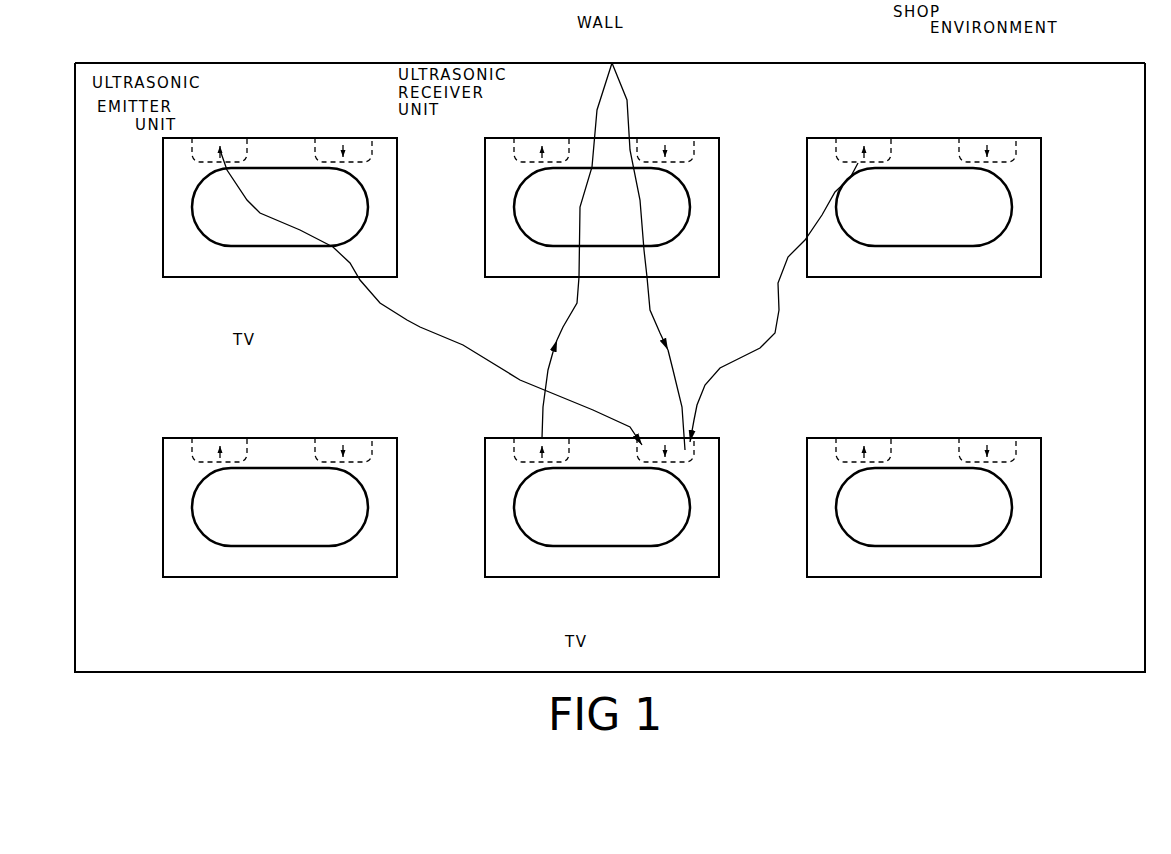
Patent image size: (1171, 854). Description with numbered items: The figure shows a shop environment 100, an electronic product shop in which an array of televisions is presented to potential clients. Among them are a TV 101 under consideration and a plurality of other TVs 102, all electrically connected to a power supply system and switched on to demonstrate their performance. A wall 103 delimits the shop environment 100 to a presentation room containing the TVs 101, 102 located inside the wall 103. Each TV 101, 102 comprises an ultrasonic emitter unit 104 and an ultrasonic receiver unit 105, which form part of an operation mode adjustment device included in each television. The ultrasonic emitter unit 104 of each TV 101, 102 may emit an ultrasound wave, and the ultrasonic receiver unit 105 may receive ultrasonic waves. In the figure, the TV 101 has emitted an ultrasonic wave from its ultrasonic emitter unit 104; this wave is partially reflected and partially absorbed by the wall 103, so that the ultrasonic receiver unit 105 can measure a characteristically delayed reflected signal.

The shop environment 100 is at (797, 58).
The TV under consideration 101 is at (552, 585).
The other TVs 102 is at (228, 287).
The wall 103 is at (527, 62).
The ultrasonic emitter unit 104 is at (230, 147).
The ultrasonic receiver unit 105 is at (357, 147).